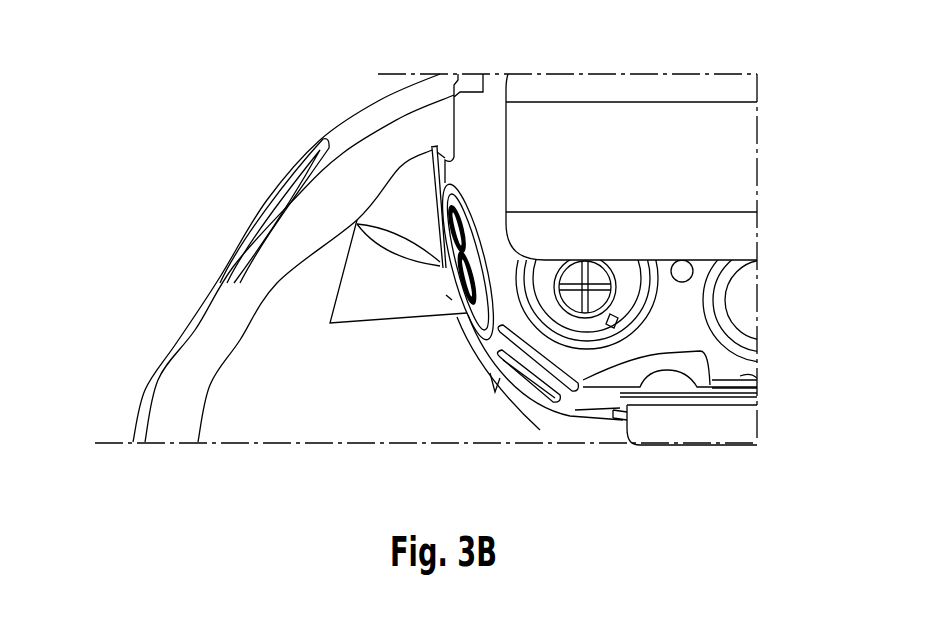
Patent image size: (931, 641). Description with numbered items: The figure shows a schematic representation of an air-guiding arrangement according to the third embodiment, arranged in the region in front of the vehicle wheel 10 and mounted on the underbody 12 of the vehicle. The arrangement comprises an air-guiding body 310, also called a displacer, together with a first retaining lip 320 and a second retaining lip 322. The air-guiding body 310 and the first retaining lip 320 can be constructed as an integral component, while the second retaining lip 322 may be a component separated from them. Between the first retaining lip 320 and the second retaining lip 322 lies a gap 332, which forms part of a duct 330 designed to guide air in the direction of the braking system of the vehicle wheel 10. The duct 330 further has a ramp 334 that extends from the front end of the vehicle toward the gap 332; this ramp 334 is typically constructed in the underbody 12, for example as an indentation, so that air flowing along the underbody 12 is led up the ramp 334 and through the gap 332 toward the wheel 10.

The vehicle wheel 10 is at (627, 122).
The underbody 12 is at (265, 413).
The air-guiding body 310 is at (383, 193).
The first retaining lip 320 is at (434, 152).
The second retaining lip 322 is at (510, 403).
The duct 330 is at (300, 305).
The gap 332 is at (452, 297).
The ramp 334 is at (363, 283).